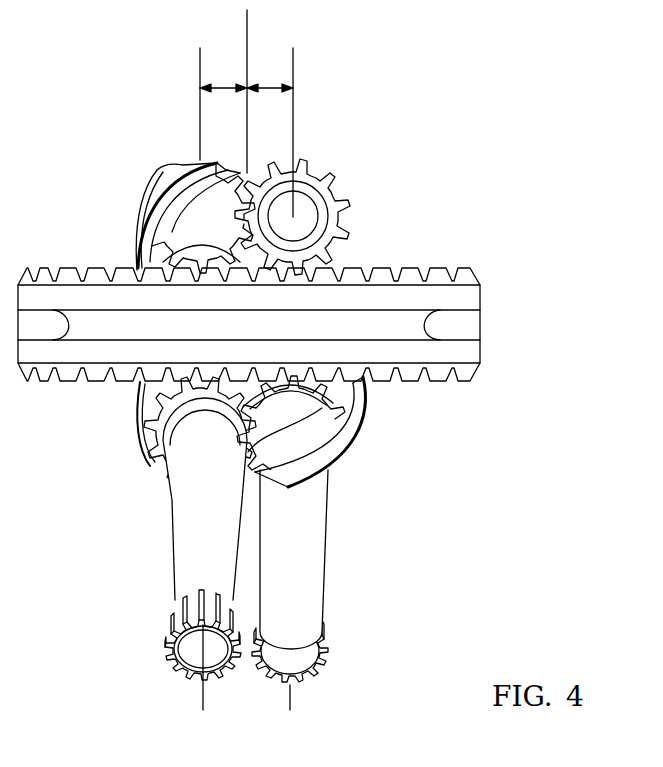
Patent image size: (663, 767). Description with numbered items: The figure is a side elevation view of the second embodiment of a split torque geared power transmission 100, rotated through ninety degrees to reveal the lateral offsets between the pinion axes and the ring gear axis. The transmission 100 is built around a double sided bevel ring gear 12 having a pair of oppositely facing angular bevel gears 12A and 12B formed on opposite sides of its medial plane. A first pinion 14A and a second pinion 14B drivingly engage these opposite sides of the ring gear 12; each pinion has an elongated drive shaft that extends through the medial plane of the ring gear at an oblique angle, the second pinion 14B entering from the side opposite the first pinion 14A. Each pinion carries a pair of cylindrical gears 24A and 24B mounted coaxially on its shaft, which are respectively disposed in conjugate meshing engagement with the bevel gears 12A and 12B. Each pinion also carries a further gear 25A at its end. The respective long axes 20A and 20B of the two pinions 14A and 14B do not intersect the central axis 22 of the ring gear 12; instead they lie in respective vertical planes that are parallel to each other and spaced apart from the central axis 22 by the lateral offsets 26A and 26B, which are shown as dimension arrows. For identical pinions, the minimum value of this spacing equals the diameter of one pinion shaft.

The split torque geared power transmission 100 is at (464, 104).
The ring gear 12 is at (274, 322).
The bevel gear 12A is at (433, 264).
The bevel gear 12B is at (435, 385).
The first pinion 14A is at (325, 540).
The second pinion 14B is at (172, 527).
The long axis 20A is at (296, 56).
The long axis 20B is at (198, 56).
The central axis 22 is at (250, 20).
The cylindrical gear 24A is at (160, 195).
The cylindrical gear 24B is at (243, 529).
The output gears 25A is at (174, 632).
The lateral offset 26A is at (271, 95).
The lateral offset 26B is at (225, 95).